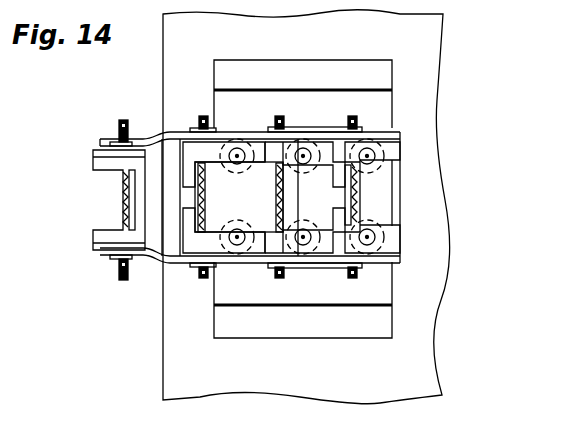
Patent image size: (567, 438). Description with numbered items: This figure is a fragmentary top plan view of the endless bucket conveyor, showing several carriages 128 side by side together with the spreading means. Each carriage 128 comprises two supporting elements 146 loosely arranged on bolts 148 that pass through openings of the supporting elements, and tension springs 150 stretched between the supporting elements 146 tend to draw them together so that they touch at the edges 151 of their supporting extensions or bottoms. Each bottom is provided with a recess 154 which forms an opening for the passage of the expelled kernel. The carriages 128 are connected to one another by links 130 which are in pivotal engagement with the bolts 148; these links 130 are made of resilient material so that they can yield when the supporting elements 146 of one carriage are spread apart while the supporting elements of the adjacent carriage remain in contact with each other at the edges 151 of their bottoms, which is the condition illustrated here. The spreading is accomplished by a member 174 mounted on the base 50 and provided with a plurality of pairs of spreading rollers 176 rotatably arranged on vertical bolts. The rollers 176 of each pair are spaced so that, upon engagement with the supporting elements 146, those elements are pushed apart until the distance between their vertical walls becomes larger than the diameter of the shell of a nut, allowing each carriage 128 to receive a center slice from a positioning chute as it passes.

The base 50 is at (306, 222).
The carriage 128 is at (223, 245).
The link 130 is at (250, 199).
The supporting element 146 is at (215, 190).
The bolt 148 is at (259, 176).
The tension spring 150 is at (260, 197).
The edge 151 is at (181, 197).
The recess 154 is at (250, 201).
The member 174 is at (320, 199).
The spreading roller 176 is at (239, 197).